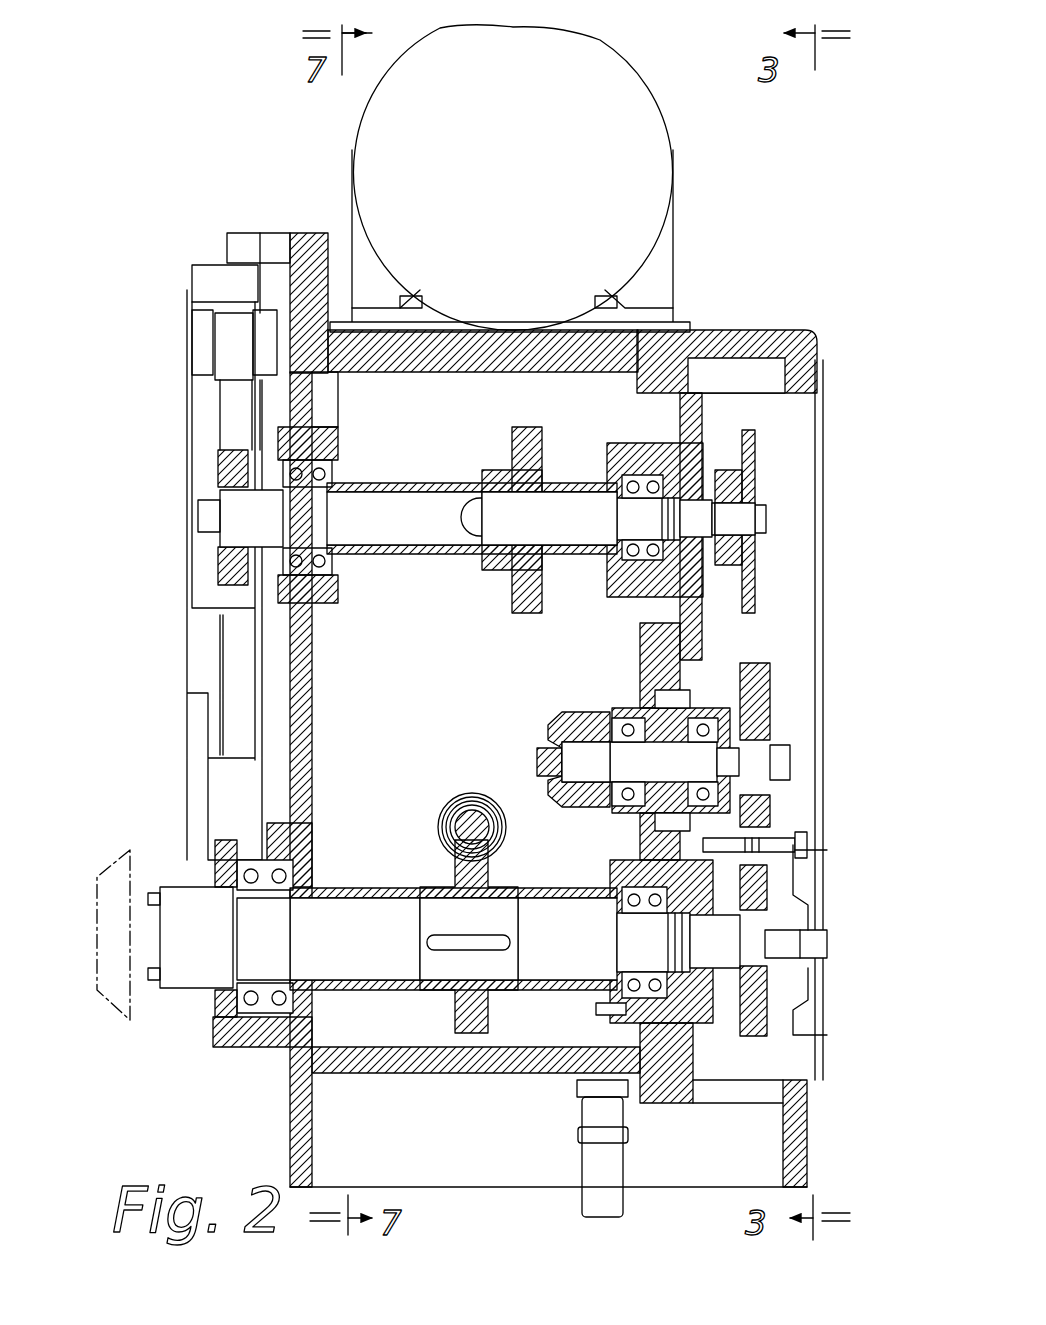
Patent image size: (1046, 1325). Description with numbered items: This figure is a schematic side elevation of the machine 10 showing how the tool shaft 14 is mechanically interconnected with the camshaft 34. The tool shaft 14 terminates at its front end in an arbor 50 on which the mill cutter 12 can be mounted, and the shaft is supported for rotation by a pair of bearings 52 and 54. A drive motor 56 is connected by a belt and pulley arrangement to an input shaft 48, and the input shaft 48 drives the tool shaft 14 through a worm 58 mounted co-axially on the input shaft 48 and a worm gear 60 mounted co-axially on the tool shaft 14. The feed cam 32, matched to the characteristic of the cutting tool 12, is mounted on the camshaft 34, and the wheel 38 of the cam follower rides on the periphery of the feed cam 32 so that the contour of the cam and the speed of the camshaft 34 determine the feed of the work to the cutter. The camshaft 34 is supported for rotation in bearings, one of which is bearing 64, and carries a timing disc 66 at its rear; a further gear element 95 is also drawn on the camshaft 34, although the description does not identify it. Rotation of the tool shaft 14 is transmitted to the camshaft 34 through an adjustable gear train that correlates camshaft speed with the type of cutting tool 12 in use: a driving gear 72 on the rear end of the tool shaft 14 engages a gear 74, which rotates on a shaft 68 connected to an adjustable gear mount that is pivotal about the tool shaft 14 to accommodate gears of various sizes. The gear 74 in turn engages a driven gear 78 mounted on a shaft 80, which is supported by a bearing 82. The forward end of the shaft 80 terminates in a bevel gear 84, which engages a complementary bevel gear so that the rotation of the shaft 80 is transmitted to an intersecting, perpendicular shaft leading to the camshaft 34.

The machine 10 is at (720, 322).
The mill cutter 12 is at (112, 878).
The tool shaft 14 is at (360, 888).
The feed cam 32 is at (222, 565).
The camshaft 34 is at (410, 555).
The wheel 38 is at (232, 378).
The input shaft 48 is at (472, 810).
The arbor 50 is at (178, 990).
The bearing 52 is at (275, 1015).
The bearing 54 is at (620, 1010).
The drive motor 56 is at (638, 128).
The worm 58 is at (462, 800).
The worm gear 60 is at (498, 1003).
The bearing 64 is at (640, 478).
The timing disc 66 is at (748, 470).
The shaft 68 is at (770, 846).
The driving gear 72 is at (760, 1010).
The gear 74 is at (775, 812).
The driven gear 78 is at (760, 690).
The shaft 80 is at (650, 760).
The bearing 82 is at (690, 722).
The bevel gear 84 is at (592, 800).
The gear 95 is at (540, 430).